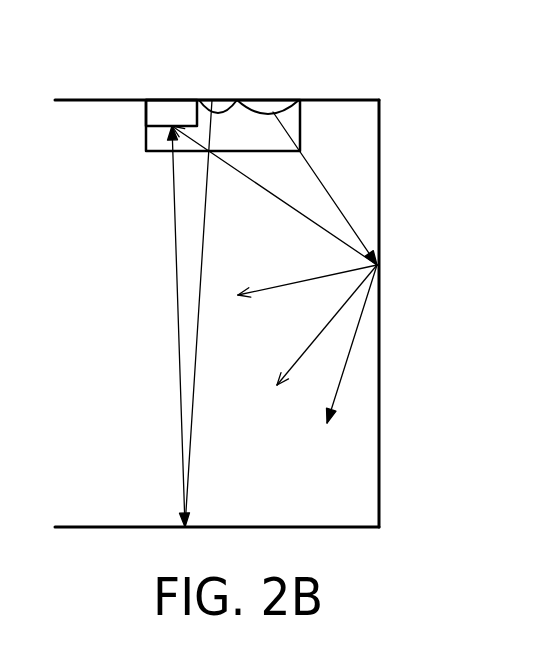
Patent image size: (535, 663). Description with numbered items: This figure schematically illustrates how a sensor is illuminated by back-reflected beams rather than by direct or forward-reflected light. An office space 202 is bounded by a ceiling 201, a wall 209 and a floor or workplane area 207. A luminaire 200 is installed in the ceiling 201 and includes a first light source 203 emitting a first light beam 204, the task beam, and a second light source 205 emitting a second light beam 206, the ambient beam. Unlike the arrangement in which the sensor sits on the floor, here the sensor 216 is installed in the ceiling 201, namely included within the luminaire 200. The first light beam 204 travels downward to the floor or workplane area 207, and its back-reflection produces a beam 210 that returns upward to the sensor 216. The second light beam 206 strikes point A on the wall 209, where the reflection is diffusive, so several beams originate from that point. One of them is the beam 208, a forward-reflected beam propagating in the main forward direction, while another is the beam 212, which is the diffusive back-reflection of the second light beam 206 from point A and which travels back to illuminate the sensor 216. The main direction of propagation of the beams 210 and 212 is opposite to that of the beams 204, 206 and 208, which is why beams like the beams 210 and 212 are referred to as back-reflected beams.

The luminaire 200 is at (148, 140).
The ceiling 201 is at (85, 100).
The office space 202 is at (343, 137).
The first light source 203 is at (215, 108).
The first light beam 204 is at (200, 260).
The second light source 205 is at (268, 108).
The second light beam 206 is at (337, 207).
The floor or workplane area 207 is at (85, 527).
The forward-reflected beam 208 is at (335, 403).
The wall 209 is at (380, 321).
The back-reflected beam 210 is at (178, 313).
The back-reflected beam 212 is at (306, 217).
The sensor 216 is at (158, 110).